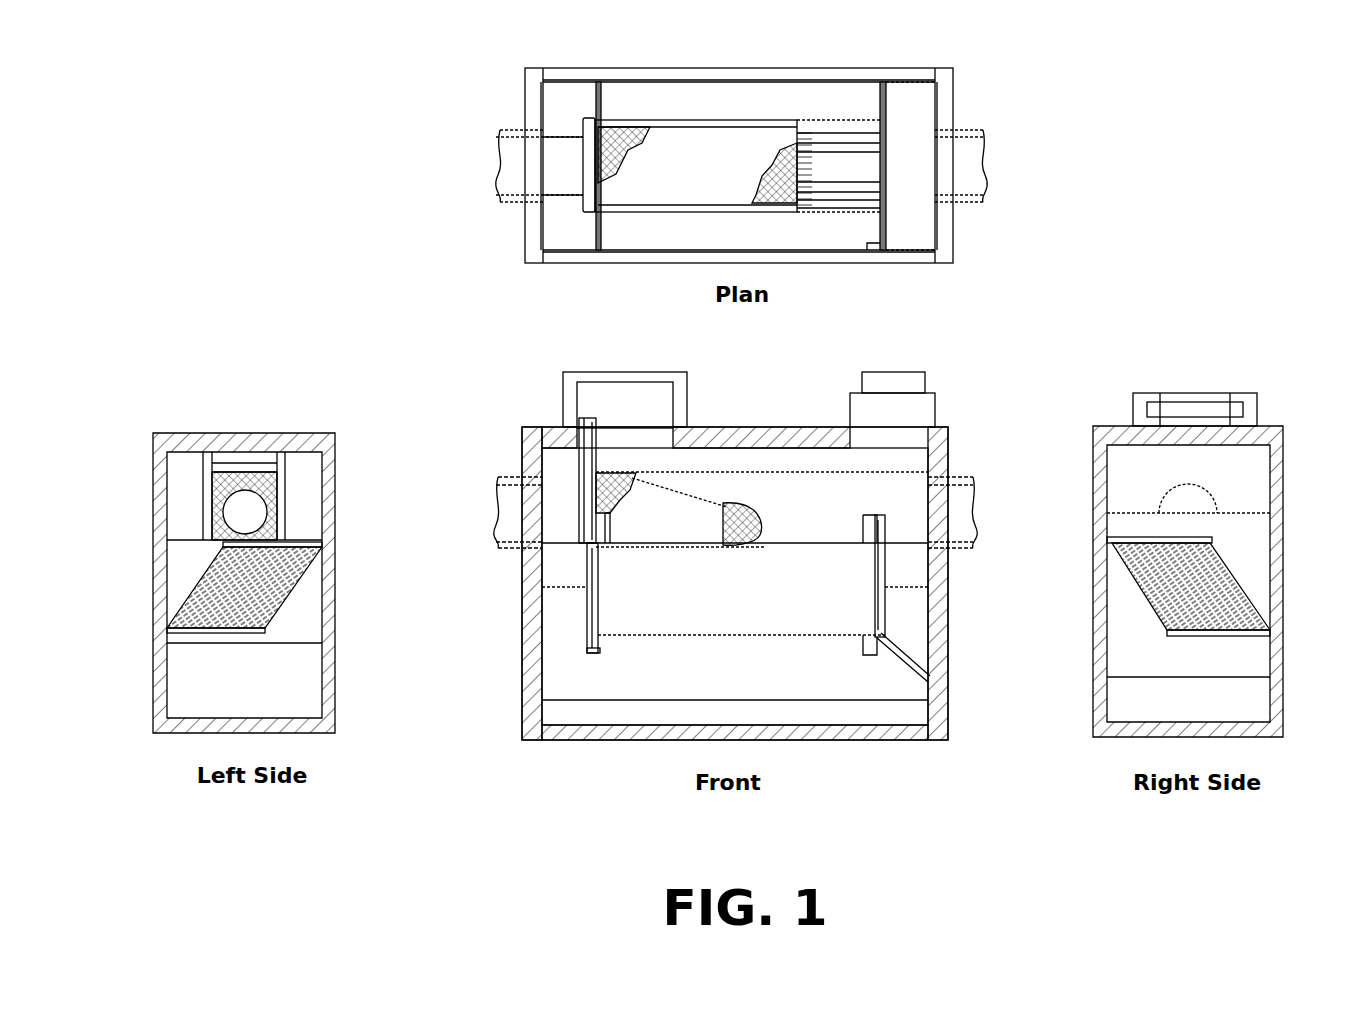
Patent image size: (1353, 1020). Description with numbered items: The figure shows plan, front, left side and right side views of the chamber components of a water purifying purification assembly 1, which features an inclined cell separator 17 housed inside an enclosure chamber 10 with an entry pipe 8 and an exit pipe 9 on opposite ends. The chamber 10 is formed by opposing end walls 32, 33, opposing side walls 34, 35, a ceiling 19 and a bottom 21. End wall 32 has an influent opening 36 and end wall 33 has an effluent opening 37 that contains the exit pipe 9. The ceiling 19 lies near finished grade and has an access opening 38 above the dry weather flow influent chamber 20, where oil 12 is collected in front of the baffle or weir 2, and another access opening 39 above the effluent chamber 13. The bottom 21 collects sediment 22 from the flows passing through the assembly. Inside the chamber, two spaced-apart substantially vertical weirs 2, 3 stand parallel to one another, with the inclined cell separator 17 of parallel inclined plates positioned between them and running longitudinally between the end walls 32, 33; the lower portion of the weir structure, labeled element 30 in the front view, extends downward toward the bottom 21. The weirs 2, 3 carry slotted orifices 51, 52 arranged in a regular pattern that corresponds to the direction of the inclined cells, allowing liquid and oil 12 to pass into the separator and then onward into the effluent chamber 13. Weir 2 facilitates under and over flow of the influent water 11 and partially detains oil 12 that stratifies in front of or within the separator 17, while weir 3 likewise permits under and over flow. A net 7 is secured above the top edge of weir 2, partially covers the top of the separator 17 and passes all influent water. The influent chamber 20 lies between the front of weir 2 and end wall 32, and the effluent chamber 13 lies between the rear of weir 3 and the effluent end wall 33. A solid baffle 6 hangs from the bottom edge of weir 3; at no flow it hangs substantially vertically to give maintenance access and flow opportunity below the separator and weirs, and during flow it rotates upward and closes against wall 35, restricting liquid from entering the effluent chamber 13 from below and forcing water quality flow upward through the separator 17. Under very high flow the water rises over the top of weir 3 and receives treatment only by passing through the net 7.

The purification assembly 1 is at (1087, 128).
The weir 2 is at (598, 105).
The weir 3 is at (885, 105).
The solid baffle 6 is at (905, 658).
The net 7 is at (708, 150).
The entry pipe 8 is at (507, 182).
The exit pipe 9 is at (960, 182).
The enclosure chamber 10 is at (785, 677).
The influent water 11 is at (468, 165).
The oil 12 is at (537, 538).
The effluent chamber 13 is at (918, 220).
The inclined cell separator 17 is at (830, 128).
The ceiling 19 is at (710, 427).
The influent chamber 20 is at (560, 113).
The bottom 21 is at (813, 735).
The sediment 22 is at (605, 670).
The baffle lower plate 30 is at (593, 582).
The end wall 32 is at (532, 247).
The end wall 33 is at (947, 100).
The side wall 34 is at (697, 75).
The side wall 35 is at (888, 253).
The influent opening 36 is at (238, 503).
The effluent opening 37 is at (1175, 500).
The access opening 38 is at (580, 402).
The access opening 39 is at (910, 410).
The orifices 51 is at (283, 578).
The orifices 52 is at (1242, 608).